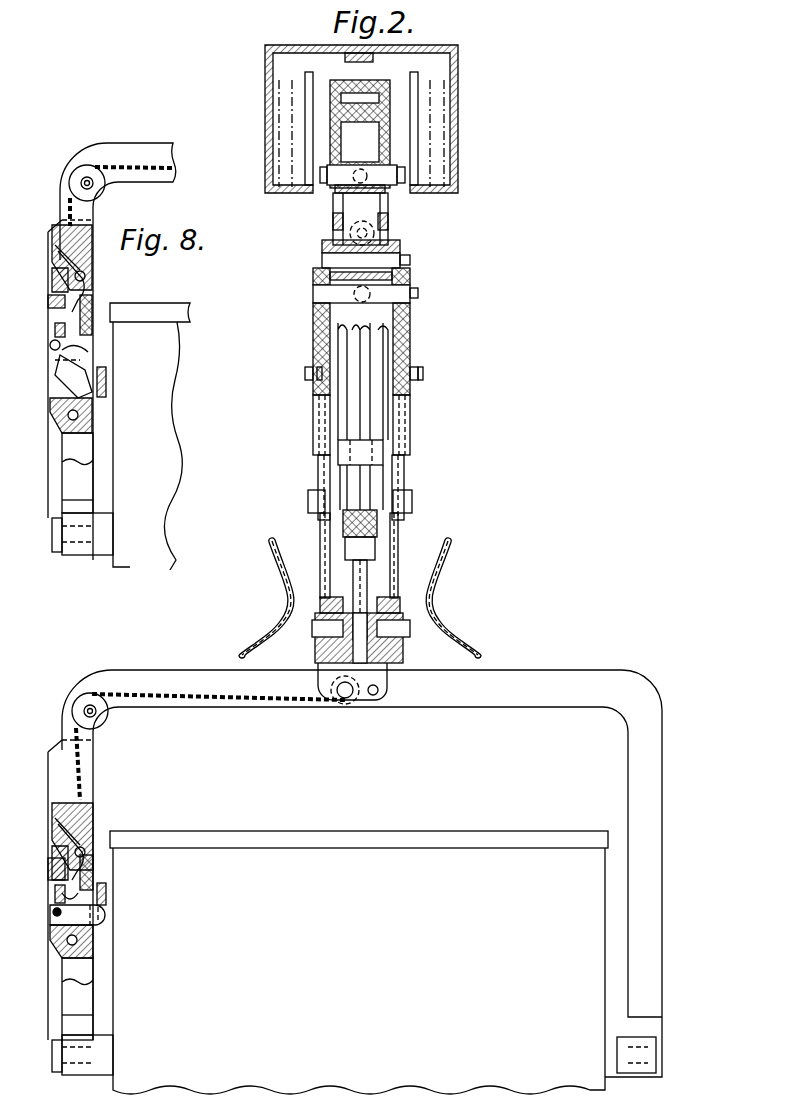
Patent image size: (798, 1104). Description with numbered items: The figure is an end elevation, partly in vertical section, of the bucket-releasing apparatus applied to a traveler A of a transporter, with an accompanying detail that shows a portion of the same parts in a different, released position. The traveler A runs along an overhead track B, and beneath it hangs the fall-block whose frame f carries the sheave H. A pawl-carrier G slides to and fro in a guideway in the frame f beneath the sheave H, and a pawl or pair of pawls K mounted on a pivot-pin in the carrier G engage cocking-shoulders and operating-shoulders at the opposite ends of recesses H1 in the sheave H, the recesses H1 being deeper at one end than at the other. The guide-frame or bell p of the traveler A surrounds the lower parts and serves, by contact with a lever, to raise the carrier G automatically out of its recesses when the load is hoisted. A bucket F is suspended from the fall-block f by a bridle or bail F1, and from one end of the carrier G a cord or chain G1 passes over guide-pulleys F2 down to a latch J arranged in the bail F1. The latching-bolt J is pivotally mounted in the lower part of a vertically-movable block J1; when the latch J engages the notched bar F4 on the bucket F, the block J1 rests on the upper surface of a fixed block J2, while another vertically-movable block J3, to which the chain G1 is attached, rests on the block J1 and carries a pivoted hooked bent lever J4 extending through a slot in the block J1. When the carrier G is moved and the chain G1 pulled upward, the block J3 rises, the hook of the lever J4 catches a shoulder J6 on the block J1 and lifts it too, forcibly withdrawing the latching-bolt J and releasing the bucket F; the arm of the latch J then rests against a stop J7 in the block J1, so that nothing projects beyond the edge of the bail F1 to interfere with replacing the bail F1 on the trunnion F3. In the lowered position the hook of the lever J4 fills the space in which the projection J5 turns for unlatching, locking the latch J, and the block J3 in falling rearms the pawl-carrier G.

In FIG. 2, the overhead track B is at (369, 119).
In FIG. 2, the traveler A is at (333, 222).
In FIG. 2, the sheave H is at (364, 406).
In FIG. 2, the recesses H1 is at (345, 410).
In FIG. 2, the fall-block f is at (338, 478).
In FIG. 2, the pawl K is at (345, 540).
In FIG. 2, the pawl-carrier G is at (360, 588).
In FIG. 2, the guide-pulleys F2 is at (333, 578).
In FIG. 8, the guide-pulleys F2 is at (75, 178).
In FIG. 2, the guide-frame or bell p is at (428, 617).
In FIG. 2, the cord or chain G1 is at (355, 650).
In FIG. 8, the cord or chain G1 is at (124, 170).
In FIG. 2, the bridle or bail F1 is at (355, 873).
In FIG. 8, the bridle or bail F1 is at (112, 351).
In FIG. 2, the bucket F is at (359, 962).
In FIG. 8, the bucket F is at (150, 436).
In FIG. 2, the trunnion F3 is at (52, 1055).
In FIG. 8, the trunnion F3 is at (52, 538).
In FIG. 2, the notched bar F4 is at (106, 893).
In FIG. 8, the notched bar F4 is at (106, 384).
In FIG. 2, the latch J is at (88, 920).
In FIG. 8, the latch J is at (65, 378).
In FIG. 2, the vertically-movable block J1 is at (48, 866).
In FIG. 8, the vertically-movable block J1 is at (48, 302).
In FIG. 2, the fixed block J2 is at (50, 936).
In FIG. 8, the fixed block J2 is at (50, 418).
In FIG. 2, the vertically-movable block J3 is at (55, 810).
In FIG. 8, the vertically-movable block J3 is at (55, 230).
In FIG. 2, the hooked bent lever J4 is at (55, 831).
In FIG. 8, the hooked bent lever J4 is at (55, 260).
In FIG. 2, the projection J5 is at (58, 905).
In FIG. 8, the projection J5 is at (62, 349).
In FIG. 2, the shoulder J6 is at (93, 878).
In FIG. 8, the shoulder J6 is at (92, 308).
In FIG. 2, the stop J7 is at (55, 888).
In FIG. 8, the stop J7 is at (55, 333).